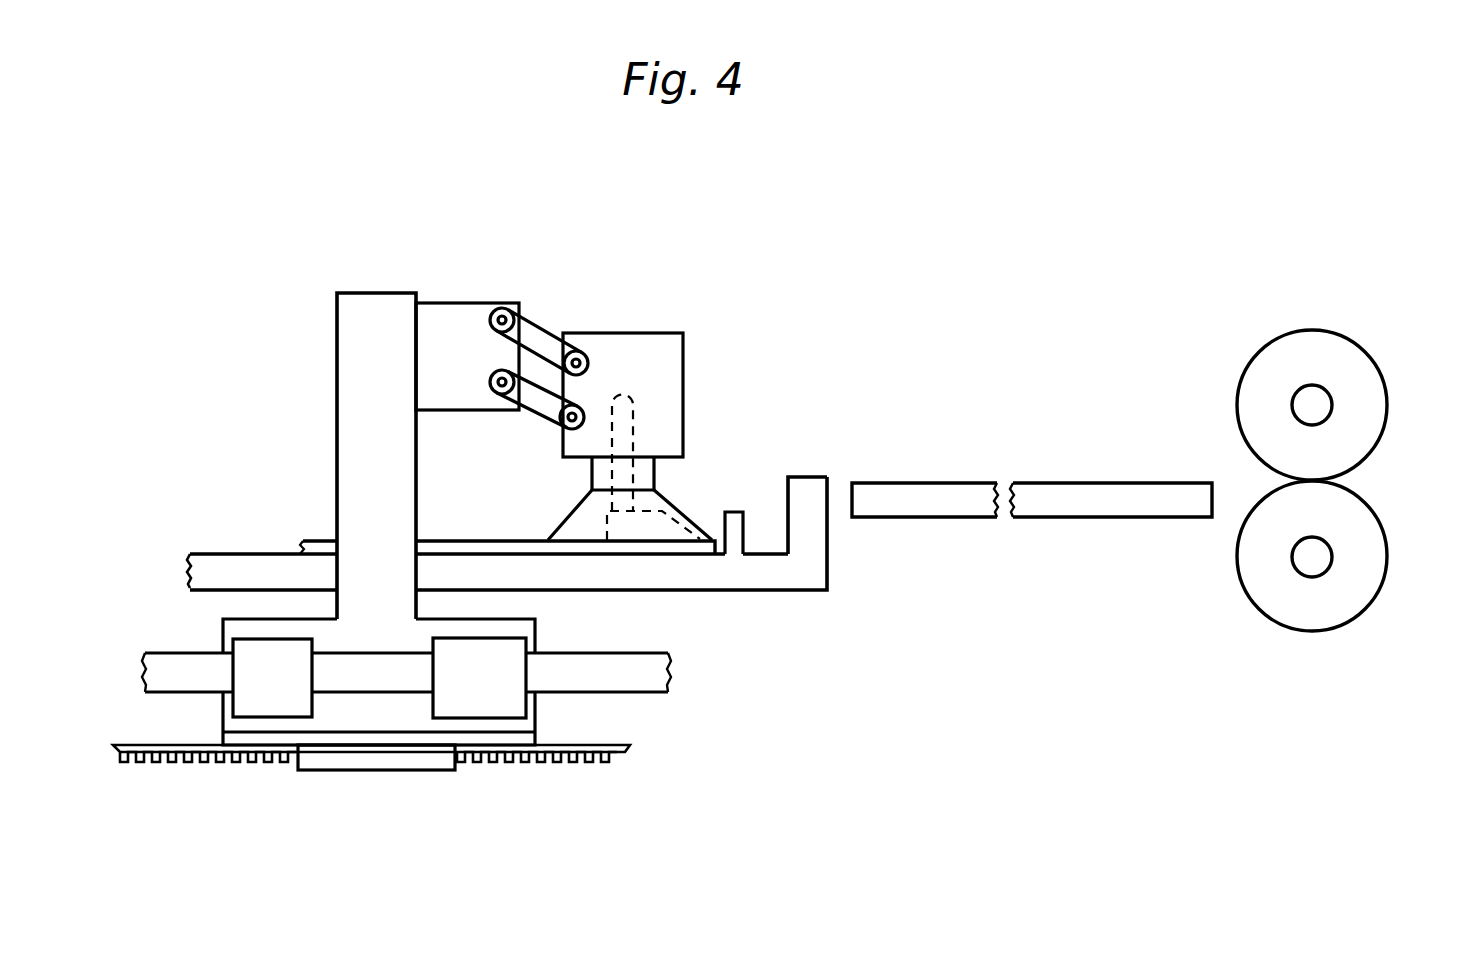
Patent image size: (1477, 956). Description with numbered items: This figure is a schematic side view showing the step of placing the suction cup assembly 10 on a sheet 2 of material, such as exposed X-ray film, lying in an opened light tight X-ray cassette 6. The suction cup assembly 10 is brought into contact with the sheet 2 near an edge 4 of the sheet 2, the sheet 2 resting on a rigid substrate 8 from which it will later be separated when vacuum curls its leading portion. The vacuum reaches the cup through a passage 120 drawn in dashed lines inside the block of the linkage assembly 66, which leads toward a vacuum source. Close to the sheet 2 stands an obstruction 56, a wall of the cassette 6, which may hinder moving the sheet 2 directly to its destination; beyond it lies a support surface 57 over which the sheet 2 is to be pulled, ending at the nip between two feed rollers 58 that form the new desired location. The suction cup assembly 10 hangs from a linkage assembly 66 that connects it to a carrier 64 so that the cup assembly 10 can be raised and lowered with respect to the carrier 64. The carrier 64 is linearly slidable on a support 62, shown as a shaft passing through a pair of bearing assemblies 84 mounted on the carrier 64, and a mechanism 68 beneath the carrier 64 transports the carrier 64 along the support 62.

The sheet 2 is at (315, 540).
The edge 4 is at (712, 523).
The light tight X-ray cassette 6 is at (738, 590).
The substrate 8 is at (222, 553).
The suction cup assembly 10 is at (675, 493).
The obstruction 56 is at (738, 502).
The support surface 57 is at (955, 483).
The feed rollers 58 is at (1385, 462).
The support 62 is at (668, 702).
The carrier 64 is at (377, 273).
The linkage assembly 66 is at (557, 300).
The mechanism for transporting the carrier 68 is at (617, 770).
The bearing assemblies 84 is at (435, 705).
The passage 120 is at (623, 398).